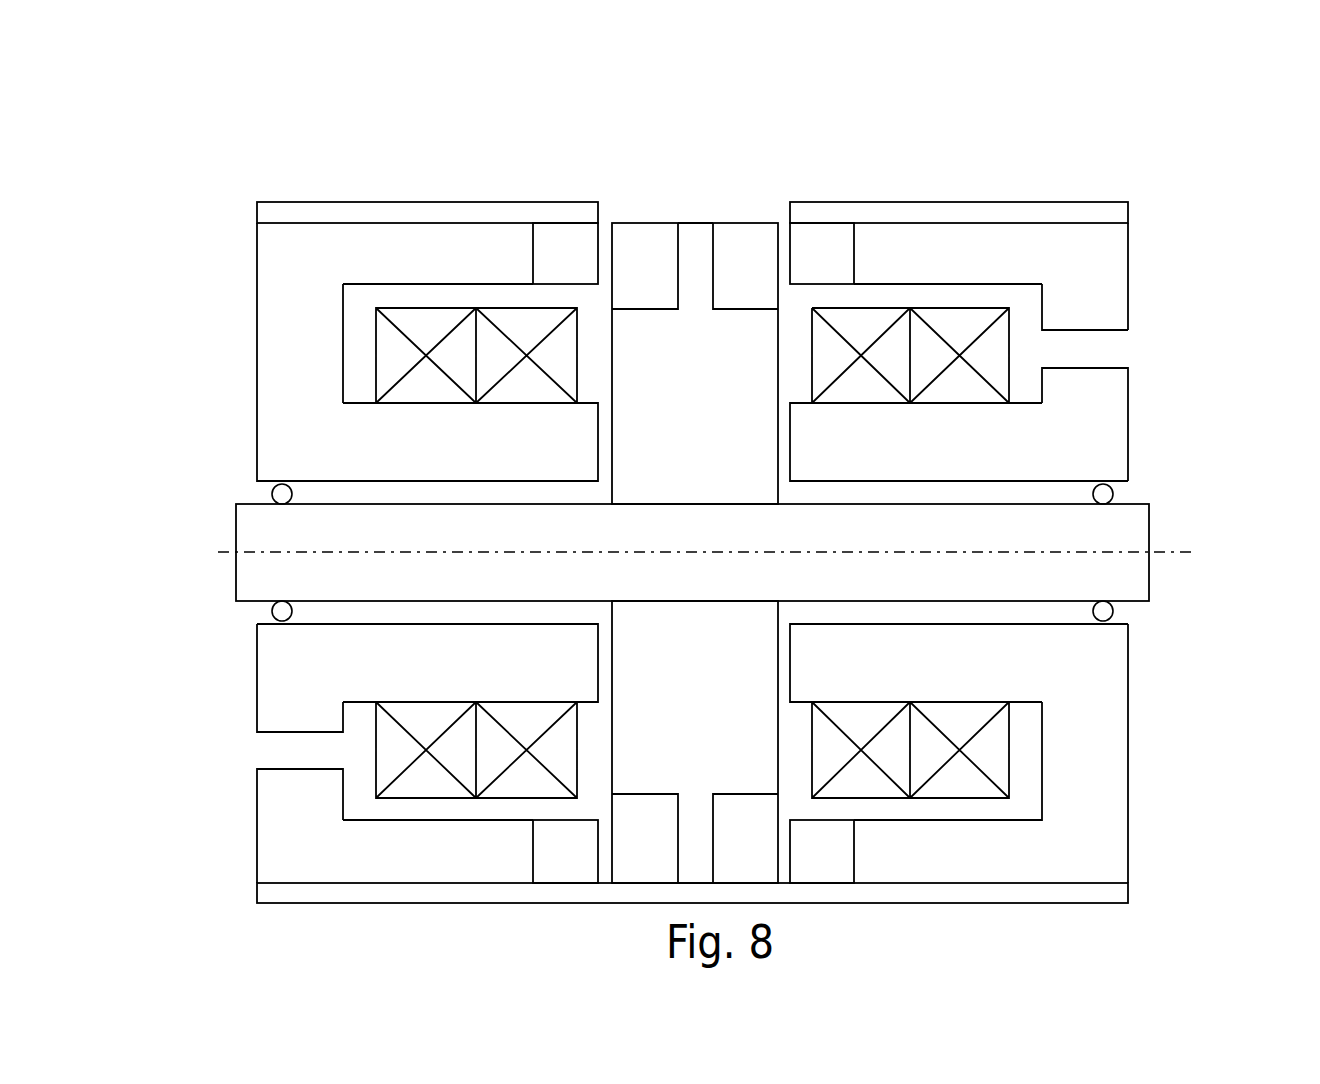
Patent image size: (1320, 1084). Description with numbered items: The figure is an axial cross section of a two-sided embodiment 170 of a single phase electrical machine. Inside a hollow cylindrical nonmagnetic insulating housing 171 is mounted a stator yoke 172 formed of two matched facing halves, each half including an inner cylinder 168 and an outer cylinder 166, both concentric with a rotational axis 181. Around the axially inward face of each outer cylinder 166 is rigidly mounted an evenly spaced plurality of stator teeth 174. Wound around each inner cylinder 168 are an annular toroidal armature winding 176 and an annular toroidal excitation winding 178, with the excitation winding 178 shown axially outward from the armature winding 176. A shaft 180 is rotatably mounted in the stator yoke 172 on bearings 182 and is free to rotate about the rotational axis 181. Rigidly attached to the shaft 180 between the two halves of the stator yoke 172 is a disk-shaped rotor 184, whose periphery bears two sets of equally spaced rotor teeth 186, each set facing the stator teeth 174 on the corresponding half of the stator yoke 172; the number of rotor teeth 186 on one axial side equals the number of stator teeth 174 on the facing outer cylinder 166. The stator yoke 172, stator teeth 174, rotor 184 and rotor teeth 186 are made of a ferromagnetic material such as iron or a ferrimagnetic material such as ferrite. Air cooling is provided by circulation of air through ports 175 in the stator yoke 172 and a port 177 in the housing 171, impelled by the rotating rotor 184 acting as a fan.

The outer cylinder 166 is at (333, 266).
The inner cylinder 168 is at (416, 457).
The two-sided embodiment 170 is at (1163, 170).
The housing 171 is at (389, 213).
The stator yoke 172 is at (278, 356).
The stator teeth 174 is at (546, 266).
The ports 175 is at (1067, 431).
The armature winding 176 is at (505, 404).
The port 177 is at (702, 210).
The excitation winding 178 is at (403, 404).
The shaft 180 is at (638, 541).
The rotational axis 181 is at (1185, 547).
The bearings 182 is at (280, 492).
The rotor 184 is at (675, 422).
The rotor teeth 186 is at (623, 282).